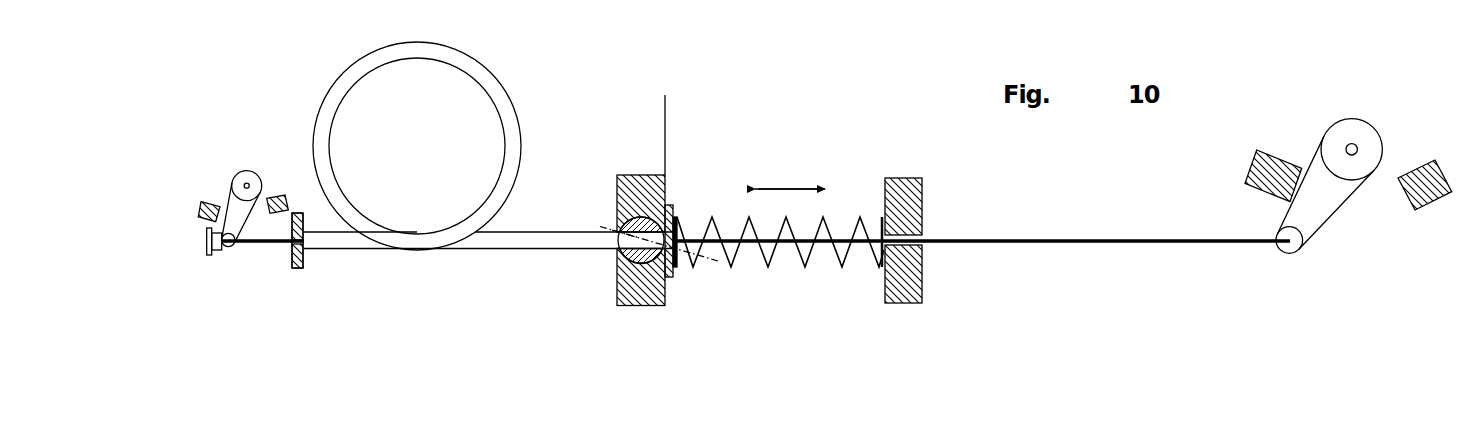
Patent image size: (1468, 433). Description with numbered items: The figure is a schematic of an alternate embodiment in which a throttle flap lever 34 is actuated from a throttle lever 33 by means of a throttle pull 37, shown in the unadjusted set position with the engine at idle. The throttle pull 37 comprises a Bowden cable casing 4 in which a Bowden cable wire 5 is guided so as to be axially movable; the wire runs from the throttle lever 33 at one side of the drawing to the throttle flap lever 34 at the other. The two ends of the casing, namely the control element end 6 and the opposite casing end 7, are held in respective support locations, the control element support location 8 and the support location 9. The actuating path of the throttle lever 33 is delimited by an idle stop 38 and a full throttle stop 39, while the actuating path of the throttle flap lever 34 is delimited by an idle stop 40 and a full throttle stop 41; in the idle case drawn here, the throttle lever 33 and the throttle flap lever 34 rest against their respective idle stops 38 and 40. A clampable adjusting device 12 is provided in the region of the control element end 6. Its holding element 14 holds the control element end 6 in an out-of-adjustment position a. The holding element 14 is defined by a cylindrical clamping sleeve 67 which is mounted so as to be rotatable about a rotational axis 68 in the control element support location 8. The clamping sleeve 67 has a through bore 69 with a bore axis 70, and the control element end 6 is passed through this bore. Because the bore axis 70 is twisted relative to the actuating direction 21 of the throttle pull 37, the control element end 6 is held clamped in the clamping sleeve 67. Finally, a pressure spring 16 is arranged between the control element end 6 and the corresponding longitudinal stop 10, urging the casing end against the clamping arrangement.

The Bowden cable casing 4 is at (513, 128).
The Bowden cable wire 5 is at (1032, 239).
The control element end 6 is at (677, 312).
The casing end 7 is at (312, 266).
The control element support location 8 is at (617, 283).
The support location 9 is at (292, 262).
The longitudinal stop 10 is at (903, 292).
The adjusting device 12 is at (621, 264).
The holding element 14 is at (643, 274).
The pressure spring 16 is at (797, 261).
The actuating direction 21 is at (786, 186).
The throttle lever 33 is at (1313, 215).
The throttle flap lever 34 is at (232, 206).
The throttle pull 37 is at (496, 73).
The idle stop 38 is at (1258, 175).
The full throttle stop 39 is at (1425, 208).
The idle stop 40 is at (200, 209).
The full throttle stop 41 is at (277, 196).
The clamping sleeve 67 is at (618, 193).
The rotational axis 68 is at (667, 200).
The through bore 69 is at (625, 226).
The bore axis 70 is at (714, 262).
The out-of-adjustment position a is at (666, 122).